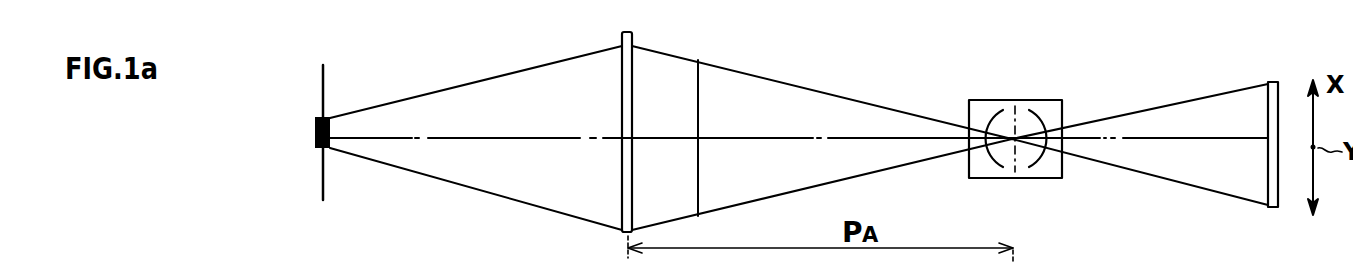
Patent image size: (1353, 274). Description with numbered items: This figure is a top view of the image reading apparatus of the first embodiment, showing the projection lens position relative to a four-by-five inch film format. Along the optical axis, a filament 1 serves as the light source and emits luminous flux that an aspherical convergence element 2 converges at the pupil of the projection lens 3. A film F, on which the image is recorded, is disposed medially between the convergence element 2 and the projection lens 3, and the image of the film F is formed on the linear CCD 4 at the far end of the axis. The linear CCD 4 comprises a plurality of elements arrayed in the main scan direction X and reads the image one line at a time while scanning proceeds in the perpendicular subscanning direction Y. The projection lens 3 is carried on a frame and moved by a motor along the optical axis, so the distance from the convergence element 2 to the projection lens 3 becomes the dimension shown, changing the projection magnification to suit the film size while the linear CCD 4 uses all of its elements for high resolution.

The filament 1 is at (314, 128).
The aspherical convergence element 2 is at (622, 75).
The film F is at (699, 109).
The projection lens 3 is at (1046, 113).
The linear charge-coupled device (CCD) 4 is at (1268, 115).